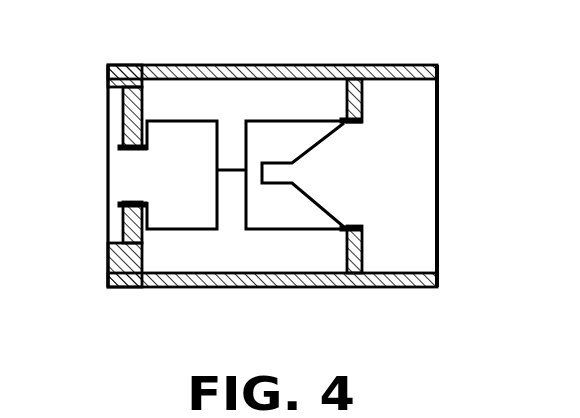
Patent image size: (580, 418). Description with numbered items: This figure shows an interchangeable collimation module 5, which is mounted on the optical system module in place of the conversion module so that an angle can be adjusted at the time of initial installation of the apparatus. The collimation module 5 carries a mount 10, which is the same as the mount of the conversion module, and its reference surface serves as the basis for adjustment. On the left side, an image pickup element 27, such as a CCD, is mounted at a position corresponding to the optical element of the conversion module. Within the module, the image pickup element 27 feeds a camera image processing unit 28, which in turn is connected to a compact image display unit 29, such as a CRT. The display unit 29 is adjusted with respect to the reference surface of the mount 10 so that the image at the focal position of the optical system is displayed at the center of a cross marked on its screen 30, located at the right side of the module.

The collimation module 5 is at (294, 63).
The mount 10 is at (124, 97).
The image pickup element 27 is at (113, 187).
The camera image processing unit 28 is at (190, 224).
The image display unit 29 is at (307, 223).
The screen 30 is at (365, 182).